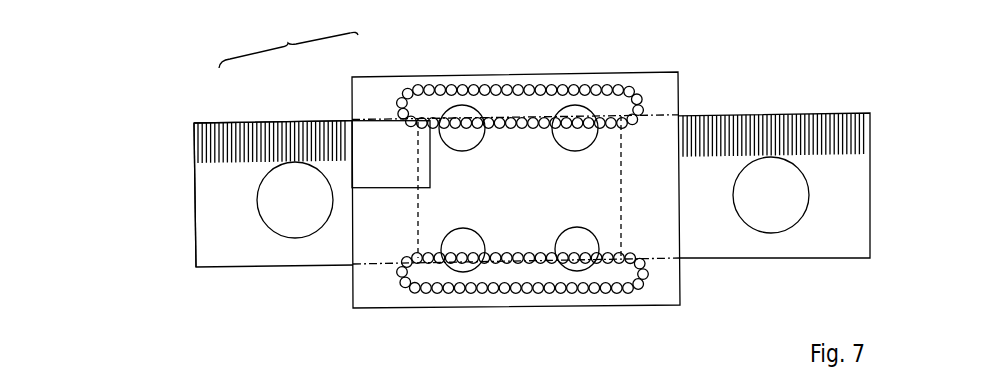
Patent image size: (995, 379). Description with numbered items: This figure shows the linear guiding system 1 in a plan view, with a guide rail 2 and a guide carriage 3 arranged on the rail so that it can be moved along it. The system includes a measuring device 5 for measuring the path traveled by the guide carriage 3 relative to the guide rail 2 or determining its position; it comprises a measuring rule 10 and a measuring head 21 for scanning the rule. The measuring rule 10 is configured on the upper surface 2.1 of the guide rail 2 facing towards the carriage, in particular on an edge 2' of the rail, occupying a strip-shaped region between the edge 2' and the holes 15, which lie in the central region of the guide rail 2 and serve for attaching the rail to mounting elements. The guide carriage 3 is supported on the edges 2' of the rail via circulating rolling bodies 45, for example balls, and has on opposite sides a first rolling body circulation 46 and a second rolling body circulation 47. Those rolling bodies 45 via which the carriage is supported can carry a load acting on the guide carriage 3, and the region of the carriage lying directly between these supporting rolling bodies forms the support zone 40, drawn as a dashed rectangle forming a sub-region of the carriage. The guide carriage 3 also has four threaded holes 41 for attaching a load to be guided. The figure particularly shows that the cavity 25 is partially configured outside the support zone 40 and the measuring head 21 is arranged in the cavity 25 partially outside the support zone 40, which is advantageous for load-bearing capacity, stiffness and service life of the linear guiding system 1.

The linear guiding system 1 is at (841, 58).
The guide rail 2 is at (506, 230).
The edge of the guide rail 2' is at (242, 125).
The surface of the guide rail 2.1 is at (208, 212).
The guide carriage 3 is at (652, 85).
The measuring device 5 is at (288, 41).
The measuring rule 10 is at (248, 133).
The holes 15 is at (286, 240).
The measuring head 21 is at (368, 142).
The cavity 25 is at (382, 122).
The support zone 40 is at (620, 167).
The threaded holes 41 is at (452, 270).
The rolling bodies 45 is at (545, 90).
The first rolling body circulation 46 is at (494, 100).
The second rolling body circulation 47 is at (517, 278).